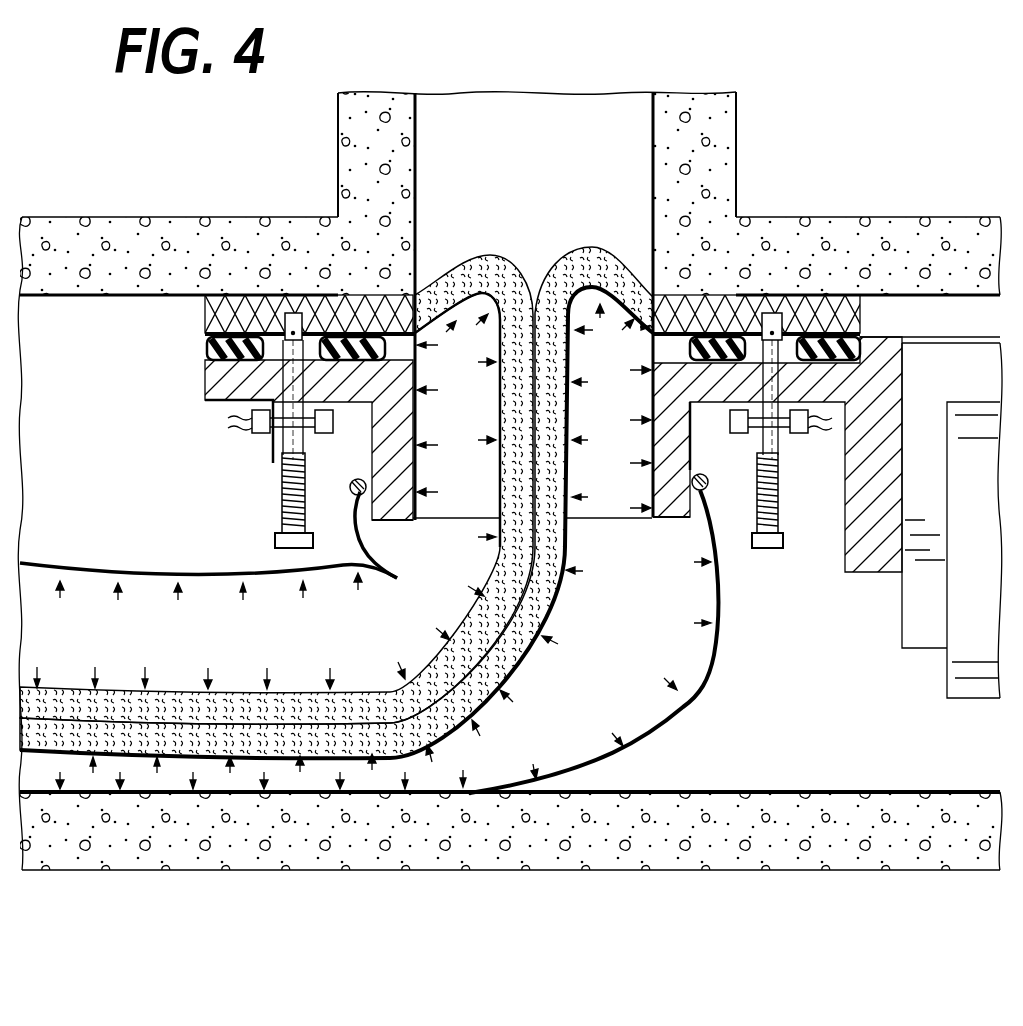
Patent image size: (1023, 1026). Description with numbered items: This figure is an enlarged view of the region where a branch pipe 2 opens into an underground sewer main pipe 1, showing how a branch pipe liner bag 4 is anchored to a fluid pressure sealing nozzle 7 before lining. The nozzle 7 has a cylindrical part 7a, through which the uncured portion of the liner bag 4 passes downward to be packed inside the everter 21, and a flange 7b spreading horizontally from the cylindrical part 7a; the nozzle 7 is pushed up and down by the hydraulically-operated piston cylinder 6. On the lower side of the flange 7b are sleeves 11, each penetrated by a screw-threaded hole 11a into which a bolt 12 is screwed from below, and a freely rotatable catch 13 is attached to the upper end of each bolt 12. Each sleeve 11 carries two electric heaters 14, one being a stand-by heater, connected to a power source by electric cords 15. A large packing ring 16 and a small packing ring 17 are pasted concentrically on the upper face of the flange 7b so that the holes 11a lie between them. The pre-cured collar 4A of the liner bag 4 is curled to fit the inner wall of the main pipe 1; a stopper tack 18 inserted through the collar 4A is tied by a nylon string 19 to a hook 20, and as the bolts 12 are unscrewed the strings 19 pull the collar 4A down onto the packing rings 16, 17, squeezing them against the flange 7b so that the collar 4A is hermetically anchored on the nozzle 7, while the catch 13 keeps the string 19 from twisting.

The underground sewer main pipe 1 is at (773, 850).
The branch pipe 2 is at (738, 121).
The branch pipe liner bag 4 is at (557, 610).
The collar 4A is at (845, 298).
The piston cylinder 6 is at (960, 672).
The fluid pressure sealing nozzle 7 is at (665, 520).
The cylindrical part 7a is at (410, 432).
The flange 7b is at (212, 400).
The sleeve 11 is at (305, 455).
The screw-threaded hole 11a is at (392, 372).
The bolt 12 is at (308, 525).
The catch 13 is at (290, 470).
The electric heater 14 is at (262, 435).
The electric cord 15 is at (240, 420).
The large packing ring 16 is at (862, 337).
The small packing ring 17 is at (677, 347).
The stopper tack 18 is at (272, 298).
The nylon string 19 is at (228, 374).
The hook 20 is at (324, 433).
The everter 21 is at (672, 715).